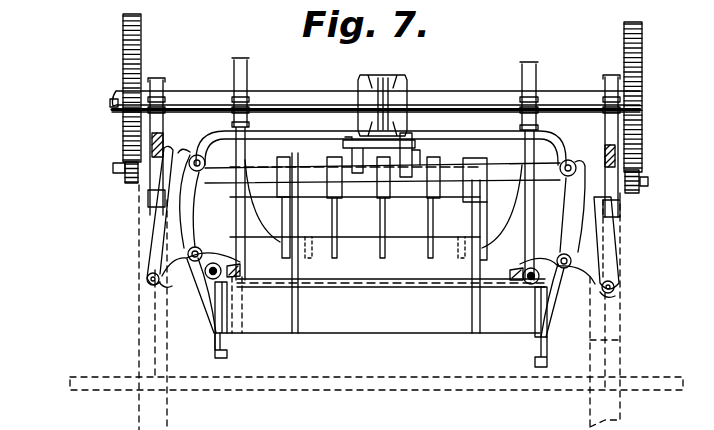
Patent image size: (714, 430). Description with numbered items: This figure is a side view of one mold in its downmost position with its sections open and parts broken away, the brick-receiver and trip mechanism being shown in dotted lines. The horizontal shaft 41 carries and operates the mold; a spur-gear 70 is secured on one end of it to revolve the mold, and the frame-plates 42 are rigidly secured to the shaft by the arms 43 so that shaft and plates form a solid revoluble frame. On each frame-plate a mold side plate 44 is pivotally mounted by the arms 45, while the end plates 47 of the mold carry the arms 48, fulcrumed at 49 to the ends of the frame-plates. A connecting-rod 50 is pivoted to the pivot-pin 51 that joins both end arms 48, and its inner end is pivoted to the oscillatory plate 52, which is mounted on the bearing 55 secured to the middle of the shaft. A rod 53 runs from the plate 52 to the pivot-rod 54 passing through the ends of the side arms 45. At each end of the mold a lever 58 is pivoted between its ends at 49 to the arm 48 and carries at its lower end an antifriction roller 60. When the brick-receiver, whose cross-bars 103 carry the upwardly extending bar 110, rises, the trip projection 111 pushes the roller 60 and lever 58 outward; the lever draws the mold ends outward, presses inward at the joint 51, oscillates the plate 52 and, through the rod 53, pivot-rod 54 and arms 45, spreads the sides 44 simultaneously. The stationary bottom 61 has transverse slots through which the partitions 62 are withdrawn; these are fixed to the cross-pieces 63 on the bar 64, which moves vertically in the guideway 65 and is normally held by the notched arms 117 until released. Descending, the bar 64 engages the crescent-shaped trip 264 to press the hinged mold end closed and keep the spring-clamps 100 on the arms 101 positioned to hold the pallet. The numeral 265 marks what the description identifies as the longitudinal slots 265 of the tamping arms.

The horizontal shaft 41 is at (448, 98).
The frame-plates 42 is at (662, 155).
The arms 43 is at (164, 124).
The mold side plate 44 is at (383, 319).
The arms 45 is at (470, 223).
The end plates 47 is at (535, 313).
The arms 48 is at (572, 227).
The fulcrum 49 is at (563, 273).
The connecting-rods 50 is at (460, 128).
The pivot-pin 51 is at (580, 140).
The oscillatory plate 52 is at (345, 143).
The rod 53 is at (417, 152).
The pivot-rod 54 is at (450, 165).
The bearing 55 is at (390, 75).
The lever 58 is at (643, 252).
The antifriction roller 60 is at (635, 293).
The bottom 61 is at (347, 283).
The partitions 62 is at (395, 223).
The cross-pieces 63 is at (442, 180).
The bar 64 is at (382, 176).
The guideway 65 is at (638, 208).
The spur-gear 70 is at (657, 72).
The spring-clamps 100 is at (535, 356).
The arms 101 is at (213, 337).
The cross-bars 103 is at (376, 388).
The bar 110 is at (597, 340).
The trip projection 111 is at (635, 305).
The arms 117 is at (597, 225).
The trip 264 is at (378, 259).
The longitudinal slots 265 is at (240, 268).